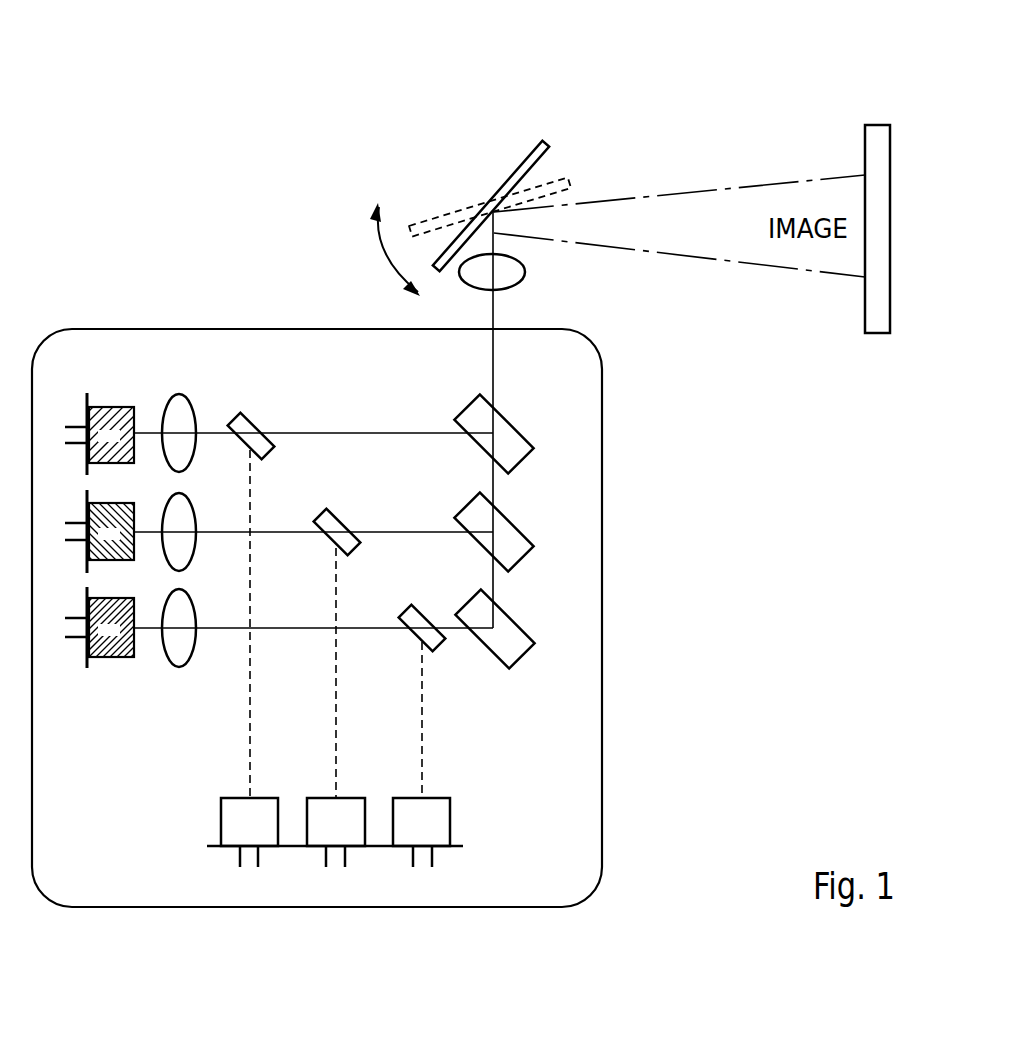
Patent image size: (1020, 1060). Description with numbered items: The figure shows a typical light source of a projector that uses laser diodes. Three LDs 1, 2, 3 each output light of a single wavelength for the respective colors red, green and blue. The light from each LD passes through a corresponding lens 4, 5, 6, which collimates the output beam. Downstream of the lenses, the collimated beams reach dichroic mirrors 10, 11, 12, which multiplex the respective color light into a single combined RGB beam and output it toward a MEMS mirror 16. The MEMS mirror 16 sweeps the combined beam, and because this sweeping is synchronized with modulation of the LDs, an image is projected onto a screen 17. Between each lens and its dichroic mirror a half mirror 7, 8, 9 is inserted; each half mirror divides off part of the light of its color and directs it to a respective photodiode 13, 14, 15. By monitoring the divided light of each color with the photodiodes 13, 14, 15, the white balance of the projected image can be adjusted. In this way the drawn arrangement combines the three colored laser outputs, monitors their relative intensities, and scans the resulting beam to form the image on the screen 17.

The LD 1 is at (115, 406).
The LD 2 is at (115, 504).
The LD 3 is at (115, 599).
The lens 4 is at (193, 411).
The lens 5 is at (193, 508).
The lens 6 is at (193, 605).
The half mirror 7 is at (253, 425).
The half mirror 8 is at (340, 524).
The half mirror 9 is at (427, 617).
The dichroic mirror 10 is at (518, 402).
The dichroic mirror 11 is at (518, 501).
The dichroic mirror 12 is at (518, 598).
The photodiode 13 is at (263, 797).
The photodiode 14 is at (350, 797).
The photodiode 15 is at (437, 797).
The MEMS mirror 16 is at (542, 140).
The screen 17 is at (877, 125).